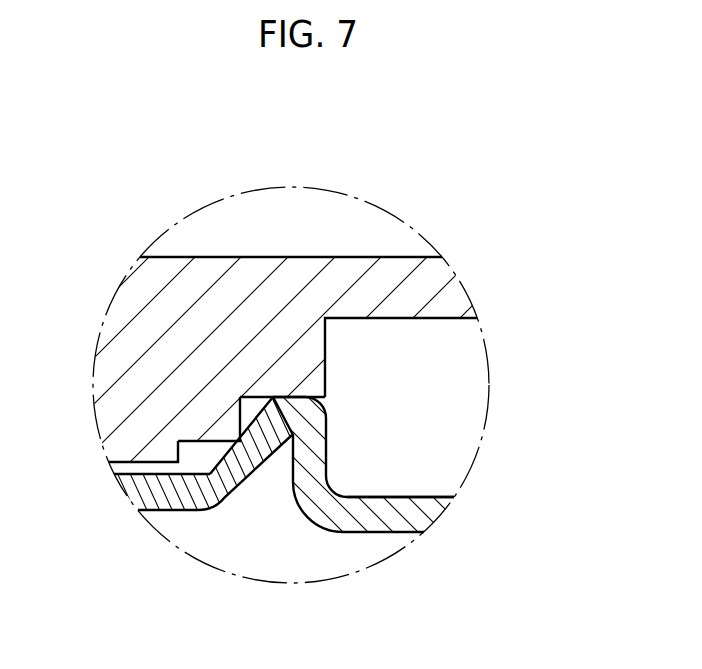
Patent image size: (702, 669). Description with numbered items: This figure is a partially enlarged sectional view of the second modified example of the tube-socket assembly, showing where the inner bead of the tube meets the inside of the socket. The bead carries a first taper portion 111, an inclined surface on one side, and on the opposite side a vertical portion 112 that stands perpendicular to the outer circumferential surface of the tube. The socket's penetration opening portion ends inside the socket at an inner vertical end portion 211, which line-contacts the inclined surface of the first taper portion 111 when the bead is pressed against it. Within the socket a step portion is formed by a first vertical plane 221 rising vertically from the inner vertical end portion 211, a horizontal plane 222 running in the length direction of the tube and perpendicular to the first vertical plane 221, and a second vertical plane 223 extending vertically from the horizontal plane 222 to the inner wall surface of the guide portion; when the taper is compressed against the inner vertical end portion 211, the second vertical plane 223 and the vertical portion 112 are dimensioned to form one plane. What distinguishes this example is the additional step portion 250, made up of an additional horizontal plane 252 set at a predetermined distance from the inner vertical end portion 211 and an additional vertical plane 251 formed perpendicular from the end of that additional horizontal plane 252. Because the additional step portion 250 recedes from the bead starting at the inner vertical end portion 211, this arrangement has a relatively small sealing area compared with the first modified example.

The first taper portion 111 is at (245, 396).
The vertical portion 112 is at (325, 453).
The inner vertical end portion 211 is at (258, 478).
The first vertical plane 221 is at (238, 417).
The horizontal plane 222 is at (270, 396).
The second vertical plane 223 is at (325, 356).
The additional step portion 250 is at (153, 597).
The additional vertical plane 251 is at (145, 511).
The additional horizontal plane 252 is at (207, 443).